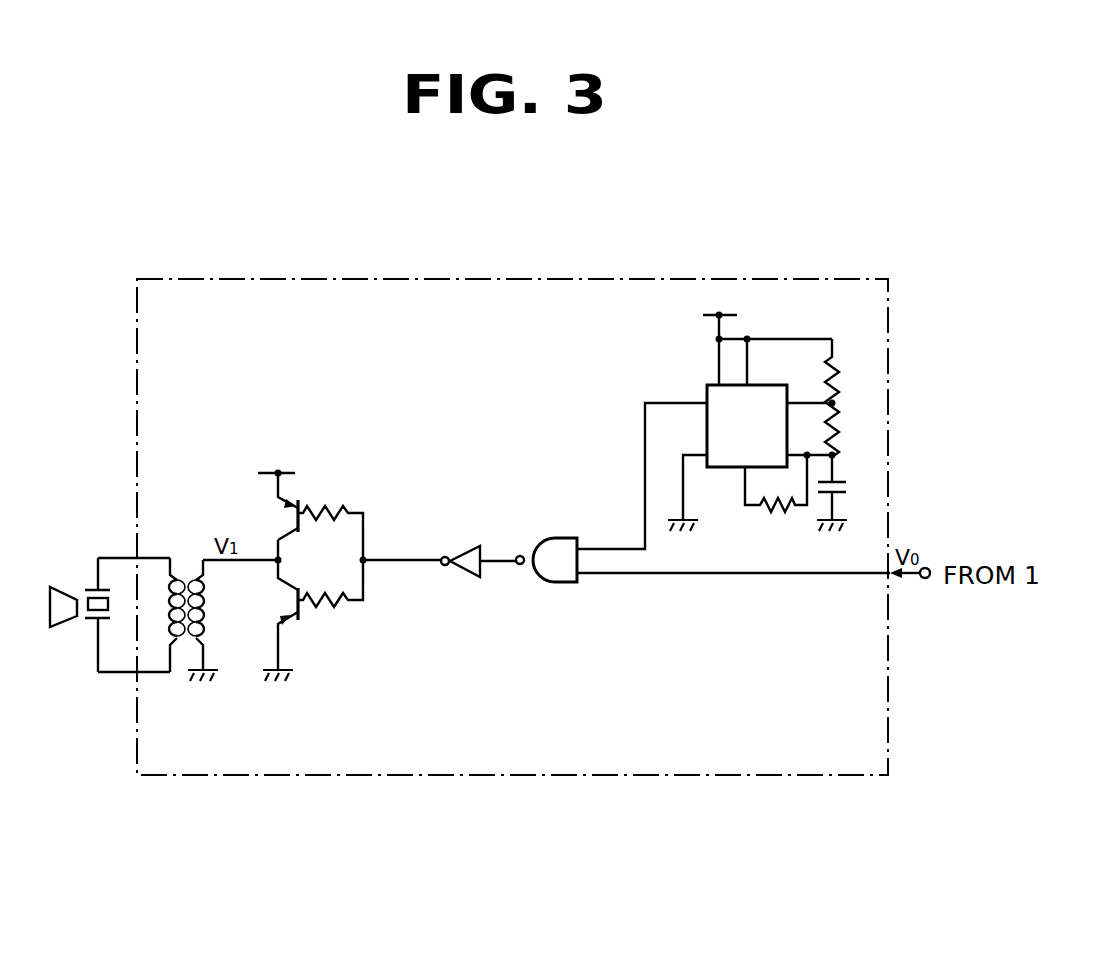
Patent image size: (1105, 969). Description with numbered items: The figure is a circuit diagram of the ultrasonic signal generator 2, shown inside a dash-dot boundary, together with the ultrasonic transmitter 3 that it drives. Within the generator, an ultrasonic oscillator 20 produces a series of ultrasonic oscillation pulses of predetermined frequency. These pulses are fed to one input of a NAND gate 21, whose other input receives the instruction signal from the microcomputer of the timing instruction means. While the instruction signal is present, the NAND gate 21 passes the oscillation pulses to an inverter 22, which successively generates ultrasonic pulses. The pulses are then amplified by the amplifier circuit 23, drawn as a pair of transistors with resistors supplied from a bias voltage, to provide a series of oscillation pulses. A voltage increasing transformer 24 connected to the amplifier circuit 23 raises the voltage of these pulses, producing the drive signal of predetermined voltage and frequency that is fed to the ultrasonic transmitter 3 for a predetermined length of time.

The ultrasonic signal generator 2 is at (270, 278).
The ultrasonic transmitter 3 is at (62, 587).
The voltage increasing transformer 24 is at (183, 558).
The amplifier circuit 23 is at (350, 510).
The inverter 22 is at (463, 578).
The NAND gate 21 is at (558, 585).
The ultrasonic oscillator 20 is at (808, 339).